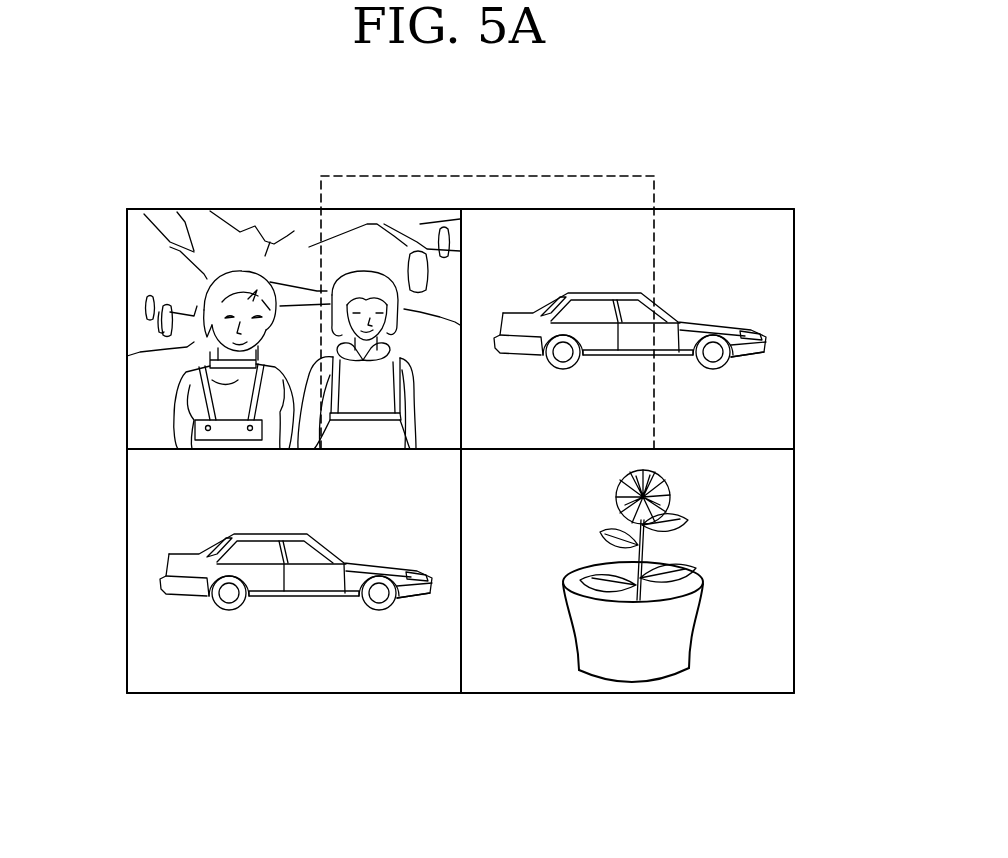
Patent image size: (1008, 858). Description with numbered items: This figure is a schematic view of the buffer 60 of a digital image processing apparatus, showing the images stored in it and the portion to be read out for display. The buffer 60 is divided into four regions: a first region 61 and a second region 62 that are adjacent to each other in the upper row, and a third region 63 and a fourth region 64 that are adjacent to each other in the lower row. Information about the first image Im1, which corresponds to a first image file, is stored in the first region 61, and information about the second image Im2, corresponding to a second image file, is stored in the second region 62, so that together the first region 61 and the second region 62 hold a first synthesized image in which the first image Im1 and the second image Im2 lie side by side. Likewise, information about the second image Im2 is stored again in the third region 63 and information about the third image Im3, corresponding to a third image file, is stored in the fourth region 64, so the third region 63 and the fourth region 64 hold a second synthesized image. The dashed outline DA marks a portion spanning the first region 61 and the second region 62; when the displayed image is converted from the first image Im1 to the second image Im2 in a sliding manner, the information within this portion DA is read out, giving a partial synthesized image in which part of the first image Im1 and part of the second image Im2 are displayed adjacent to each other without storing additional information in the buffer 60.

The buffer 60 is at (753, 184).
The first region 61 is at (127, 385).
The second region 62 is at (794, 385).
The third region 63 is at (127, 637).
The fourth region 64 is at (794, 637).
The portion including the first region and the second region DA is at (539, 176).
The first image Im1 is at (212, 222).
The second image Im2 is at (683, 222).
The third image Im3 is at (719, 676).